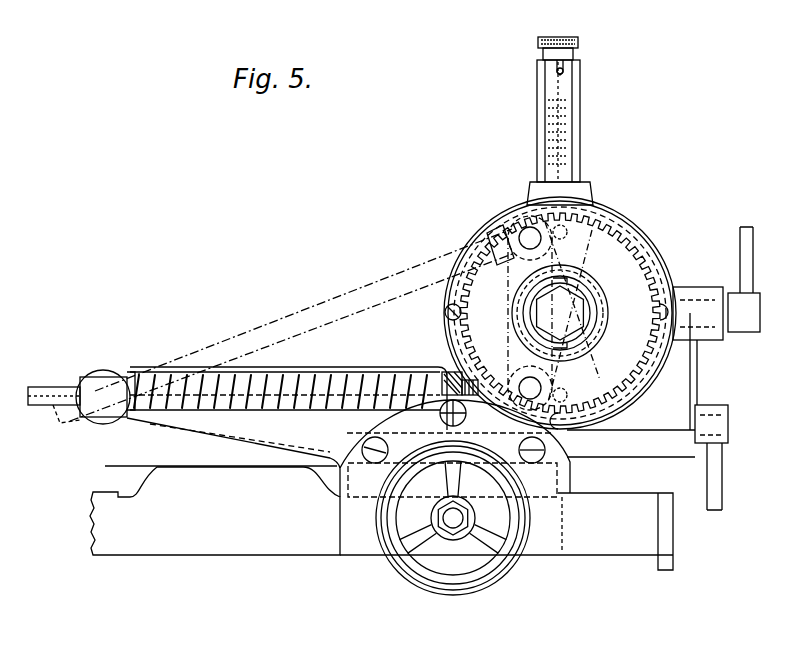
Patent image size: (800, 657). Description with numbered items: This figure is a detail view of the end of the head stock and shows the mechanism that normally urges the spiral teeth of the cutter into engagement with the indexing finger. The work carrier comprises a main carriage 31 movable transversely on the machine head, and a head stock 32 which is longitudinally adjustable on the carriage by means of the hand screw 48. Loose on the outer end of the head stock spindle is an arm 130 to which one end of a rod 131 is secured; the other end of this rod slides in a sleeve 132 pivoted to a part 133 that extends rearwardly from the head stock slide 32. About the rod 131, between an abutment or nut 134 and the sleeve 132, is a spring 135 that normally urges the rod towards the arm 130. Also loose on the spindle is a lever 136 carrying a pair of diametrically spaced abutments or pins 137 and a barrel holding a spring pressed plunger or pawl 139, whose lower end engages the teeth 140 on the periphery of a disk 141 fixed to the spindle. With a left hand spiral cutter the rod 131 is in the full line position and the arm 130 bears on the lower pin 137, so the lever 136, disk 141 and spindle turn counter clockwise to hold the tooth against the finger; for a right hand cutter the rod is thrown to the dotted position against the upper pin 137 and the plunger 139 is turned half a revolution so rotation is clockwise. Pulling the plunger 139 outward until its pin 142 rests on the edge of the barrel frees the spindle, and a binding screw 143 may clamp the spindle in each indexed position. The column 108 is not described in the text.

The main carriage 31 is at (190, 545).
The head stock 32 is at (465, 245).
The hand screw 48 is at (347, 498).
The column 108 is at (582, 95).
The arm 130 is at (447, 338).
The rod 131 is at (307, 377).
The sleeve 132 is at (98, 418).
The part 133 is at (182, 421).
The abutment or nut 134 is at (433, 400).
The spring 135 is at (227, 408).
The lever 136 is at (596, 203).
The abutments or pins 137 is at (604, 222).
The spring pressed plunger or pawl 139 is at (580, 40).
The teeth 140 is at (647, 257).
The disk 141 is at (640, 277).
The pin 142 is at (563, 72).
The binding screw 143 is at (750, 332).